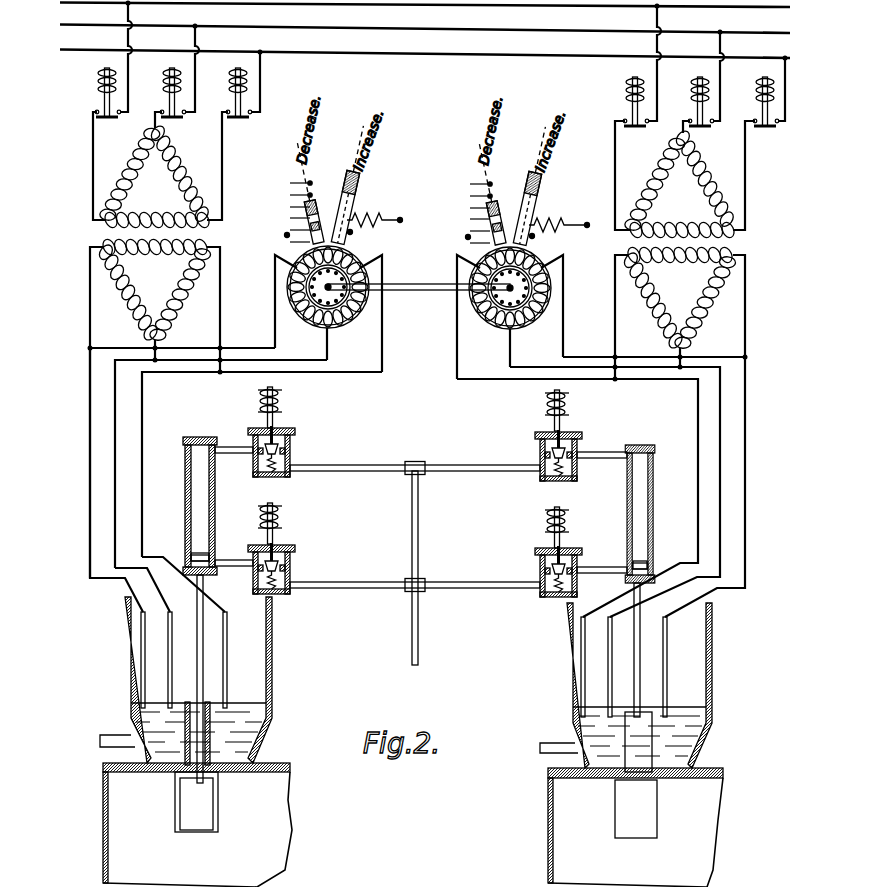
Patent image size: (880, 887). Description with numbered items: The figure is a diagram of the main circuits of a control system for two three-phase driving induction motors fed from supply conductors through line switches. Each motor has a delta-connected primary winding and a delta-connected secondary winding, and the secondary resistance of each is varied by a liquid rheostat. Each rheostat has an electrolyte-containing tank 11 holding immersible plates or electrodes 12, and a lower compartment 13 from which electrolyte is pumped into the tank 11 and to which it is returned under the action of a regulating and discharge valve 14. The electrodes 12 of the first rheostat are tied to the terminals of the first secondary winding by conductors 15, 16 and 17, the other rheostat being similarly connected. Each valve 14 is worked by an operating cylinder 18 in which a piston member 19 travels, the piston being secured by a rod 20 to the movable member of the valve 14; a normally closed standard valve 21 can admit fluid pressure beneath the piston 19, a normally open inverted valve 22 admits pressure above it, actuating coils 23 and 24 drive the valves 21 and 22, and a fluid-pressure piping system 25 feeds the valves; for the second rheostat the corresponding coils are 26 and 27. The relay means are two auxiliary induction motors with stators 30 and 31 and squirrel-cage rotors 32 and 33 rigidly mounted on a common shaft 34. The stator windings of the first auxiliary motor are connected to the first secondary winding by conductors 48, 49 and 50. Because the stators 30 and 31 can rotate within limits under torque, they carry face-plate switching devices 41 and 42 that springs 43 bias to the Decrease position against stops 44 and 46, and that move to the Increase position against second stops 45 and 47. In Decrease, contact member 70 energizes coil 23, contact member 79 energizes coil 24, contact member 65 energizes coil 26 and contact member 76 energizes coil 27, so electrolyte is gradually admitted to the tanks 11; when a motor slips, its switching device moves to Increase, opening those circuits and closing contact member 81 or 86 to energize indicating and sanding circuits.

The electrolyte-containing tank 11 is at (272, 631).
The immersible plates or electrodes 12 is at (145, 670).
The lower compartment 13 is at (280, 796).
The regulating and discharge valve 14 is at (204, 750).
The conductor 15 is at (90, 553).
The conductor 16 is at (115, 541).
The conductor 17 is at (142, 522).
The operating cylinder 18 is at (185, 512).
The piston member 19 is at (205, 560).
The rod 20 is at (203, 583).
The standard valve 21 is at (290, 563).
The inverted valve 22 is at (290, 448).
The actuating coil 23 is at (281, 517).
The actuating coil 24 is at (281, 403).
The fluid-pressure piping system 25 is at (410, 523).
The actuating coil 26 is at (568, 527).
The actuating coil 27 is at (572, 413).
The stator 30 is at (315, 322).
The stator 31 is at (488, 322).
The squirrel-cage rotor 32 is at (284, 287).
The squirrel-cage rotor 33 is at (472, 300).
The shaft 34 is at (418, 291).
The switching device 41 is at (331, 178).
The switching device 42 is at (511, 182).
The spring 43 is at (378, 207).
The stop or pin 44 is at (365, 242).
The second stop or pin 45 is at (281, 211).
The stop or pin 46 is at (546, 243).
The second stop or pin 47 is at (461, 214).
The conductor 48 is at (250, 348).
The conductor 49 is at (303, 360).
The conductor 50 is at (367, 372).
The contact member 65 is at (500, 192).
The contact member 70 is at (317, 191).
The contact member 76 is at (510, 228).
The contact member 79 is at (327, 223).
The contact member 81 is at (361, 184).
The contact member 86 is at (543, 185).